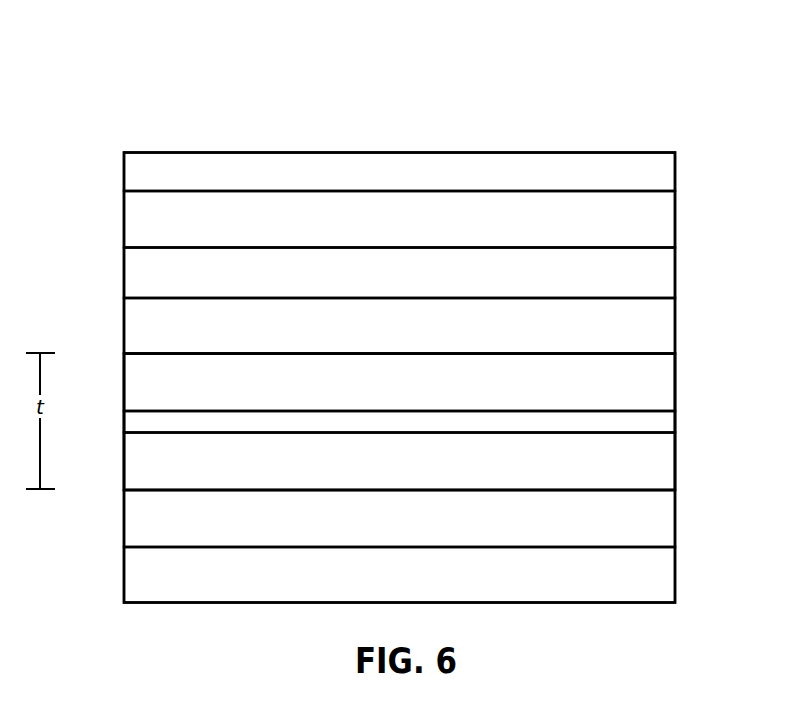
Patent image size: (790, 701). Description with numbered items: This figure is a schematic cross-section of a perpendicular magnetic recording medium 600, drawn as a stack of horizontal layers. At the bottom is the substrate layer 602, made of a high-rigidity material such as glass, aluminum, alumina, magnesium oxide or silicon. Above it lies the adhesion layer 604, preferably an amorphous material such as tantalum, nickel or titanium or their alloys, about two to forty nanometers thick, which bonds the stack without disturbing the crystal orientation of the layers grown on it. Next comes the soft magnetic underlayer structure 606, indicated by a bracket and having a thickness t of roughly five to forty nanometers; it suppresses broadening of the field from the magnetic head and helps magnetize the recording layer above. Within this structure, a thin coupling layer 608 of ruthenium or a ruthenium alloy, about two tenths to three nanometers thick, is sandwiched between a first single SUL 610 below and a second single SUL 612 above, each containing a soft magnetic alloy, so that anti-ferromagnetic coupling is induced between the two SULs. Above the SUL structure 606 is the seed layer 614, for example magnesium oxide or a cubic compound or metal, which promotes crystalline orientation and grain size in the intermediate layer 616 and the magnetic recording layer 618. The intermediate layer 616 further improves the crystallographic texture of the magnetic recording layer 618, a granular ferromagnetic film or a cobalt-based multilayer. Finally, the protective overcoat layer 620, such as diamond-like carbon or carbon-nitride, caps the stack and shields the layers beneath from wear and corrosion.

The perpendicular magnetic recording medium 600 is at (172, 104).
The substrate layer 602 is at (419, 587).
The adhesion layer 604 is at (419, 531).
The soft magnetic underlayer (SUL) structure 606 is at (682, 353).
The coupling layer 608 is at (125, 428).
The first single SUL 610 is at (419, 474).
The second single SUL 612 is at (419, 393).
The seed layer 614 is at (419, 338).
The intermediate layer 616 is at (419, 285).
The magnetic recording layer 618 is at (419, 229).
The protective overcoat layer 620 is at (419, 183).